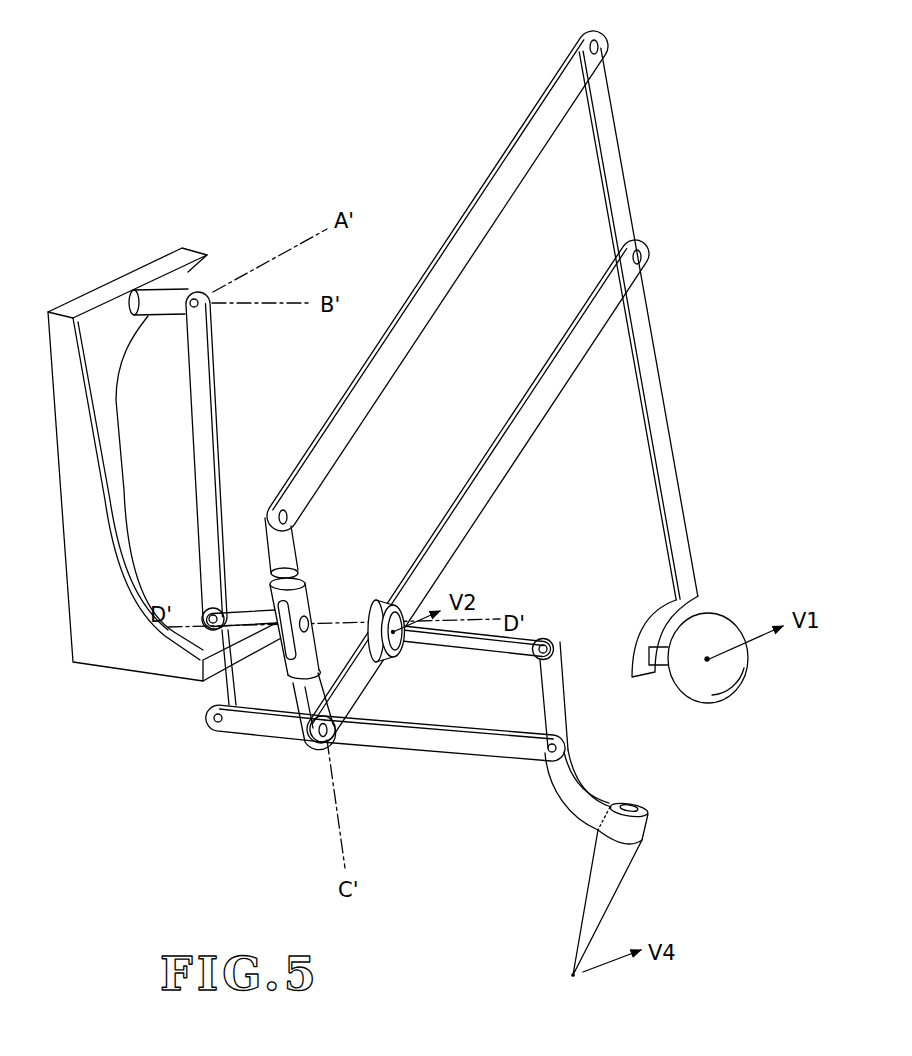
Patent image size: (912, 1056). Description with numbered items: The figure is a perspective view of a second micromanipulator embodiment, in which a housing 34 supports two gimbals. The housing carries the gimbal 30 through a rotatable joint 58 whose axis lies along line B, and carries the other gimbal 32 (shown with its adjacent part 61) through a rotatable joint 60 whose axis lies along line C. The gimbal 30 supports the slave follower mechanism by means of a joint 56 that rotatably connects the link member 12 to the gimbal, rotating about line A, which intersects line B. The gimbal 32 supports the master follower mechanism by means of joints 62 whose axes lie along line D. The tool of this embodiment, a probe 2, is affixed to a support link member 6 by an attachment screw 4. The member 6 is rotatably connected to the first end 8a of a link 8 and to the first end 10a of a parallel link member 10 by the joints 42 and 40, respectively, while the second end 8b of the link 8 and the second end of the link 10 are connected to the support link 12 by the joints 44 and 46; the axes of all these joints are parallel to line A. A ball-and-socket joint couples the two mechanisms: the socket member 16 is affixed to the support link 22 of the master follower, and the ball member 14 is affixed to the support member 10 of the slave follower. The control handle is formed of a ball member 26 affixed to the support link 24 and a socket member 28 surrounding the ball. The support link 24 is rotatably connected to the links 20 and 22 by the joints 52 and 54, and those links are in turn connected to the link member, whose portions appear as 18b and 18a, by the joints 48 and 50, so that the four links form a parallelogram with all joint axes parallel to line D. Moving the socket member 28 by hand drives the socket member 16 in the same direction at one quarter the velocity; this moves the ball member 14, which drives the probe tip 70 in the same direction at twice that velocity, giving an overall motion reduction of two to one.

The probe 2 is at (611, 895).
The attachment screw 4 is at (645, 808).
The support link member 6 is at (560, 805).
The link 8 is at (456, 762).
The first end of link 8a is at (532, 768).
The second end of link 8b is at (232, 745).
The parallel link member 10 is at (456, 648).
The first end of parallel link member 10a is at (542, 616).
The link member 12 is at (220, 386).
The ball member 14 is at (406, 642).
The socket member 16 is at (399, 625).
The lower rod 18a is at (300, 742).
The upper rod 18b is at (262, 500).
The link 20 is at (426, 331).
The link 22 is at (500, 485).
The support link 24 is at (688, 429).
The ball member 26 is at (666, 674).
The socket member 28 is at (733, 690).
The gimbal 30 is at (149, 322).
The gimbal 32 is at (316, 600).
The housing 34 is at (120, 681).
The joint 40 is at (556, 652).
The joint 42 is at (556, 746).
The joint 44 is at (214, 730).
The joint 46 is at (207, 608).
The joint 48 is at (298, 515).
The joint 50 is at (328, 740).
The joint 52 is at (601, 50).
The joint 54 is at (645, 259).
The joint 56 is at (197, 298).
The rotatable joint 58 is at (128, 313).
The rotatable joint 60 is at (312, 574).
The rod end 61 is at (282, 678).
The joints 62 is at (309, 620).
The probe tip 70 is at (567, 976).